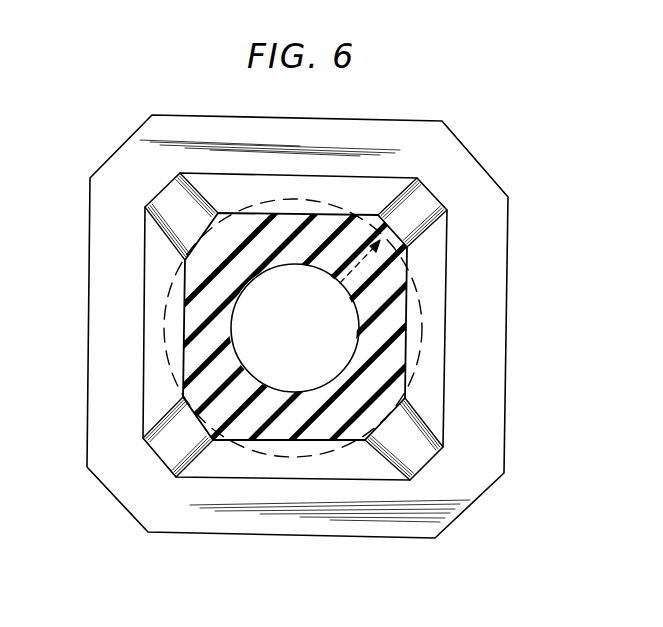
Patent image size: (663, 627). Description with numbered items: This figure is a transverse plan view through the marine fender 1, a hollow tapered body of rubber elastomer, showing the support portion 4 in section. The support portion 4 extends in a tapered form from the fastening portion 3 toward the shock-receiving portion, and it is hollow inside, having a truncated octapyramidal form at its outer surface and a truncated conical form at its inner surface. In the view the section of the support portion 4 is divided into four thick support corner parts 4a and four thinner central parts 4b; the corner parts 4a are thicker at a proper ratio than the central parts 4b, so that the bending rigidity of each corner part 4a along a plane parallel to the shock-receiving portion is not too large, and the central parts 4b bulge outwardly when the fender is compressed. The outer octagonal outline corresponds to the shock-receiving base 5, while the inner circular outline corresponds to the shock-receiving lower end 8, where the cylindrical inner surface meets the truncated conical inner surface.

The marine fender 1 is at (483, 128).
The fastening portion 3 is at (467, 472).
The support portion 4 is at (430, 402).
The support corner part 4a is at (215, 252).
The central part 4b is at (385, 318).
The shock-receiving base 5 is at (299, 443).
The shock-receiving lower end 8 is at (351, 299).